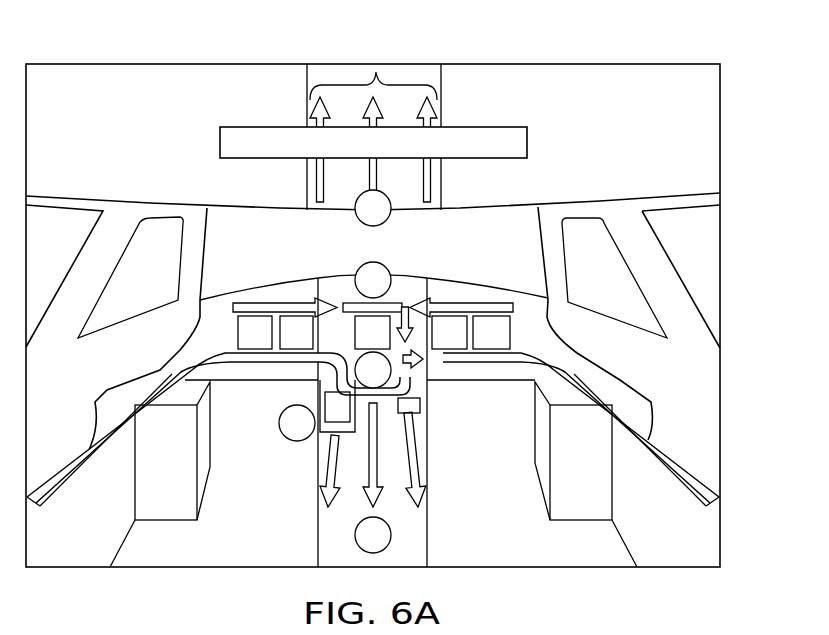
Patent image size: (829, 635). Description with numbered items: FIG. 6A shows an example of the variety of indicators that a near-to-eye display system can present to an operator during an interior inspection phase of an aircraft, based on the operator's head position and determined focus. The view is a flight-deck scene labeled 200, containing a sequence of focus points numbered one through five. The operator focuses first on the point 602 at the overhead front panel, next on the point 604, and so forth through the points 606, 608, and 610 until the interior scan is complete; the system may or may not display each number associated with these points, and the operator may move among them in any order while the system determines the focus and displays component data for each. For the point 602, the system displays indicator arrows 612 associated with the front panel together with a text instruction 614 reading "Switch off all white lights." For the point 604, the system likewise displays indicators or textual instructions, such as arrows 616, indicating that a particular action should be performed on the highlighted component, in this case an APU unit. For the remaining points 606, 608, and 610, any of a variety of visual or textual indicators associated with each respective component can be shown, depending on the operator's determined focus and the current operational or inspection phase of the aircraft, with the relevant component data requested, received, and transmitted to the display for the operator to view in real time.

The flight deck display 200 is at (165, 50).
The point 602 is at (357, 218).
The point 604 is at (294, 442).
The point 606 is at (389, 264).
The point 608 is at (407, 386).
The point 610 is at (392, 533).
The arrows 612 is at (377, 64).
The instruction label 614 is at (220, 144).
The arrows 616 is at (537, 553).